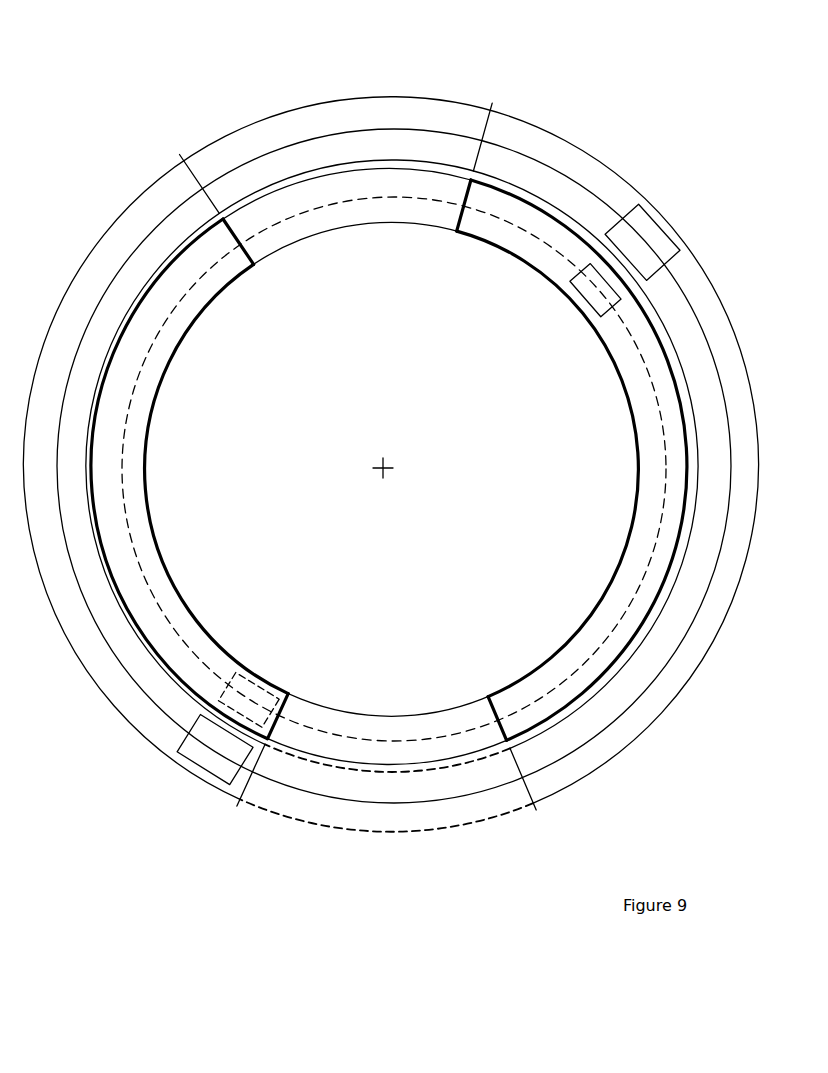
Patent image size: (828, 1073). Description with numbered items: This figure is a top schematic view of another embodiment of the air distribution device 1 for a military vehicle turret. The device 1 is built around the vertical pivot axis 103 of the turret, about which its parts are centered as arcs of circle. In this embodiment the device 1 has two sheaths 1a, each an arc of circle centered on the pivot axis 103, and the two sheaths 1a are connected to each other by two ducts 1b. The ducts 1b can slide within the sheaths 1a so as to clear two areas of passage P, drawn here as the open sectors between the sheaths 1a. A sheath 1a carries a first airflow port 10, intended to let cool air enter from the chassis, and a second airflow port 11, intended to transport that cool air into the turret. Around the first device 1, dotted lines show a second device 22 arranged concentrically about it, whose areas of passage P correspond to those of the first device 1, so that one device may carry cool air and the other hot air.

The device 1 is at (179, 398).
The sheath 1a is at (135, 588).
The duct 1b is at (293, 207).
The first airflow port 10 is at (590, 275).
The second airflow port 11 is at (243, 693).
The second device 22 is at (128, 223).
The pivot axis 103 is at (386, 468).
The area of passage P is at (503, 67).